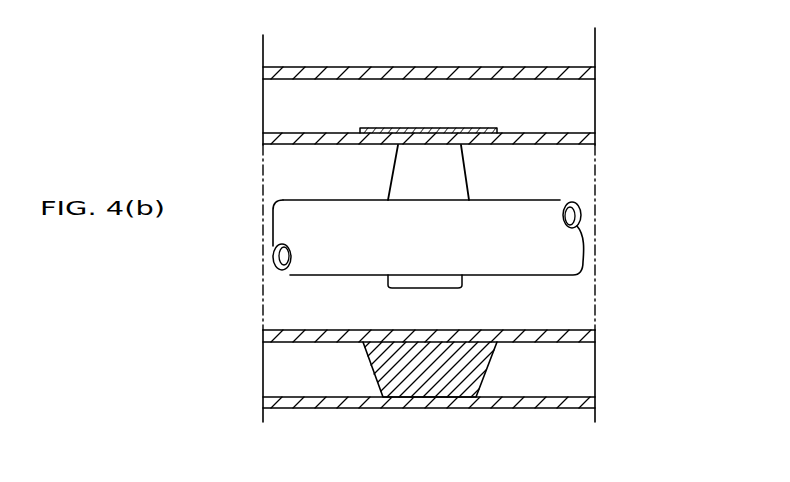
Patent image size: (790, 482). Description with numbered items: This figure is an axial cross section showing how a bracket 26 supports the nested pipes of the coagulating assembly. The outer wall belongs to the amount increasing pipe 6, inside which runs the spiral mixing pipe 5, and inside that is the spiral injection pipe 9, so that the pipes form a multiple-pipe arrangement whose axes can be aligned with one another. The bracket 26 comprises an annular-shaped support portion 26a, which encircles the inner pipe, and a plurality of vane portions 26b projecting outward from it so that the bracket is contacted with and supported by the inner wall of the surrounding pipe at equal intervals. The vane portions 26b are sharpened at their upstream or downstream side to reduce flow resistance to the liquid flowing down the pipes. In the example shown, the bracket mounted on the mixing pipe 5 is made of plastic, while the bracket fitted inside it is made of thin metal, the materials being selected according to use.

The spiral mixing pipe 5 is at (575, 129).
The amount increasing pipe 6 is at (498, 67).
The spiral injection pipe 9 is at (542, 212).
The bracket 26 is at (318, 240).
The annular-shaped support portion 26a is at (405, 128).
The vane portions 26b is at (443, 185).